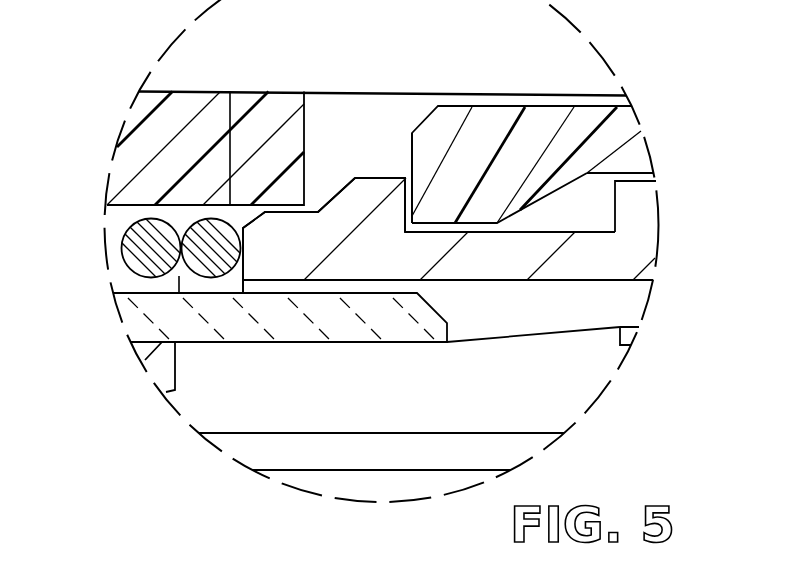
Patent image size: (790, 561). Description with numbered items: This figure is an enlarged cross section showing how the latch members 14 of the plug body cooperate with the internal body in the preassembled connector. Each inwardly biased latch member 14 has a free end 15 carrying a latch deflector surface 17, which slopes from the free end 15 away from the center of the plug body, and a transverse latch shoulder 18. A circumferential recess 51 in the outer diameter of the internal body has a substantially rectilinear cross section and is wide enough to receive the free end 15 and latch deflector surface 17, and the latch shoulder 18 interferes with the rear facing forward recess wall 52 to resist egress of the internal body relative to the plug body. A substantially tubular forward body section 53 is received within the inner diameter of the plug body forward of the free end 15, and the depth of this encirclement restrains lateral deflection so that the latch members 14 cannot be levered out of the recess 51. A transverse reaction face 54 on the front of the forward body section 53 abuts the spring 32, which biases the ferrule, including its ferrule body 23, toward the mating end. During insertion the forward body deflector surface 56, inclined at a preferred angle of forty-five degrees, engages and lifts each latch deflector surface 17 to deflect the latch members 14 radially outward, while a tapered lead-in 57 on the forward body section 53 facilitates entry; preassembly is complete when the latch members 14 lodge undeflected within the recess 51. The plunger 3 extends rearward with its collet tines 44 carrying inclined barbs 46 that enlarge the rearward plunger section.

The plunger 3 is at (152, 378).
The latch members 14 is at (637, 139).
The free end 15 is at (507, 135).
The latch deflector surface 17 is at (562, 188).
The latch shoulder 18 is at (405, 165).
The ferrule body 23 is at (155, 307).
The spring 32 is at (136, 242).
The tines 44 is at (557, 333).
The inclined barbs 46 is at (625, 338).
The circumferential recess 51 is at (552, 232).
The forward recess wall 52 is at (412, 202).
The forward body section 53 is at (292, 210).
The reaction face 54 is at (240, 243).
The forward body deflector surface 56 is at (342, 180).
The tapered lead-in 57 is at (248, 243).